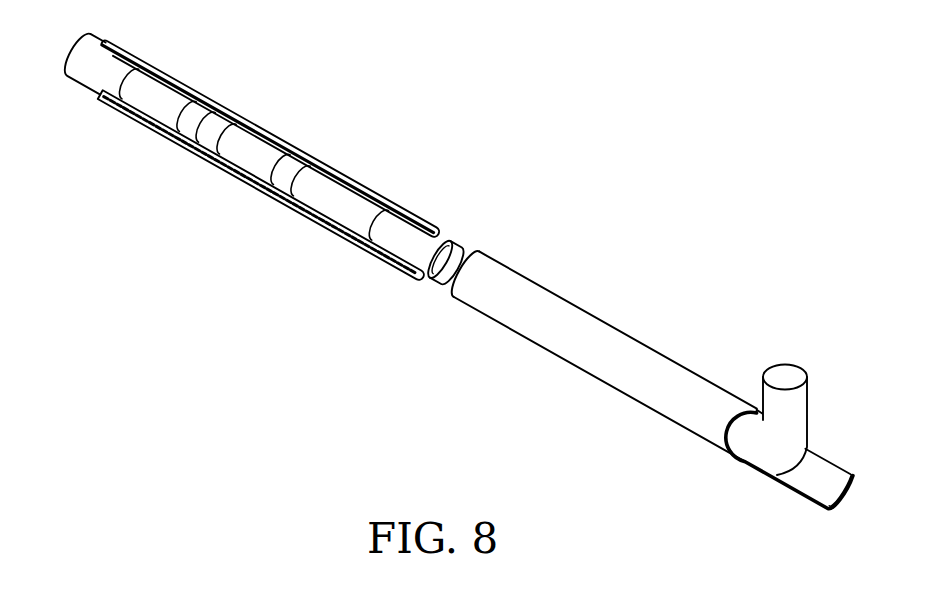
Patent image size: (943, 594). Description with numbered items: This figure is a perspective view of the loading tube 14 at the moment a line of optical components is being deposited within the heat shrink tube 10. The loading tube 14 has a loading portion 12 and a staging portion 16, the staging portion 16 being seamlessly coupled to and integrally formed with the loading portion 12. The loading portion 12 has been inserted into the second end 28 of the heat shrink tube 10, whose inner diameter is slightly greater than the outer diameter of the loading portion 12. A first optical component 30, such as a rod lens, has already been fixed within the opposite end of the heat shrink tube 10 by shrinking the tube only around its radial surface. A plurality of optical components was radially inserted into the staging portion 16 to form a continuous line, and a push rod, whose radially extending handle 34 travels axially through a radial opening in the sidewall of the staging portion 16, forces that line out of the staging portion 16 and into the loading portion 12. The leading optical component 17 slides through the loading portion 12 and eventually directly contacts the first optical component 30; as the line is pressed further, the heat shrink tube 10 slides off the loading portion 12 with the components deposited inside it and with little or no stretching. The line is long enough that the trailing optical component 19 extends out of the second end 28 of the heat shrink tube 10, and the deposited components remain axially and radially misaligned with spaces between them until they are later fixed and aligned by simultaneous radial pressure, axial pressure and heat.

The heat shrink tube 10 is at (290, 128).
The loading portion 12 is at (568, 352).
The loading tube 14 is at (618, 317).
The staging portion 16 is at (792, 492).
The leading optical component 17 is at (157, 107).
The trailing optical component 19 is at (438, 230).
The second end 28 is at (415, 280).
The first optical component 30 is at (92, 66).
The radially extending handle 34 is at (800, 404).